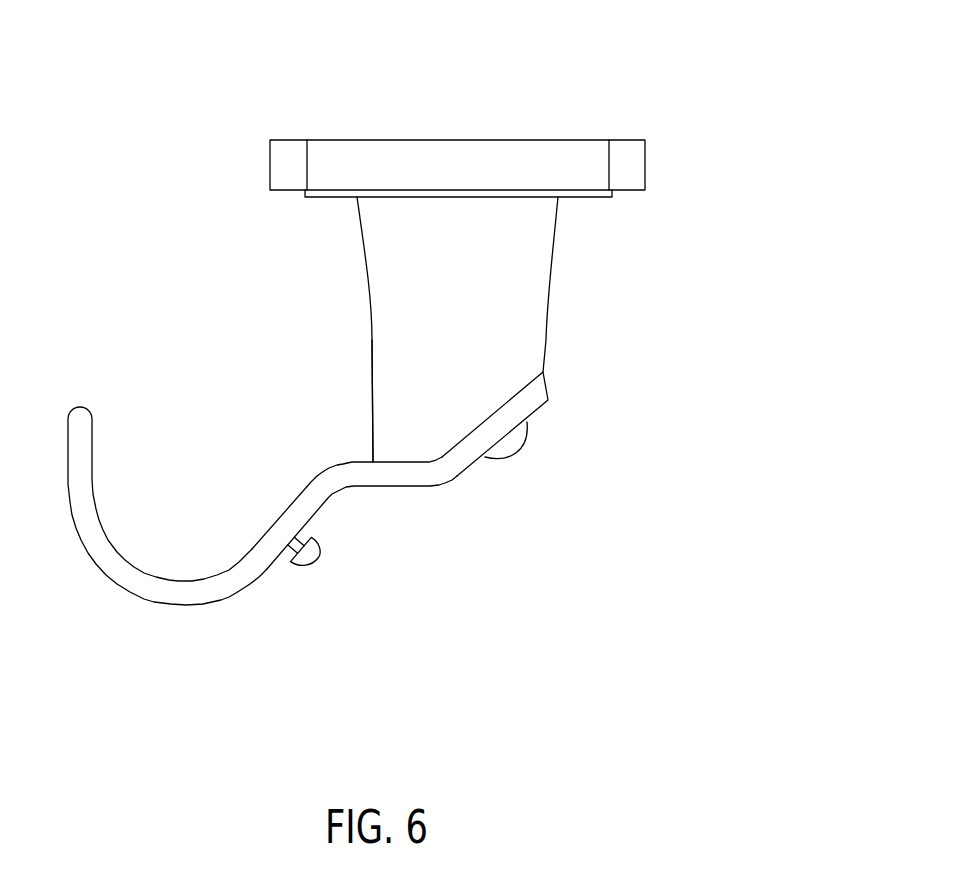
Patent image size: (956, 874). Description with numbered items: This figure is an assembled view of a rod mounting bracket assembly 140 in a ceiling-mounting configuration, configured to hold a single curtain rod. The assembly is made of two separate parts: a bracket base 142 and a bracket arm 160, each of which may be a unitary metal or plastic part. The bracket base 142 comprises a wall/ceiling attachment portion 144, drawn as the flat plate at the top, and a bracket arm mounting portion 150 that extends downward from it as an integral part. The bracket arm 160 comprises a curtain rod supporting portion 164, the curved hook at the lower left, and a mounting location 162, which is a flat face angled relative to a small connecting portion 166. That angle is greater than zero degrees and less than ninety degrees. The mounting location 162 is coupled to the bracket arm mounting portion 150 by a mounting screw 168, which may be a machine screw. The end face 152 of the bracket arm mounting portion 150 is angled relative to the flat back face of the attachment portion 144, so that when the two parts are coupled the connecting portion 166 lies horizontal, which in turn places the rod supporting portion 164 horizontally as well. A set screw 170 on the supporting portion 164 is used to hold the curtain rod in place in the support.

The rod mounting bracket assembly 140 is at (252, 229).
The bracket base 142 is at (674, 101).
The wall/ceiling attachment portion 144 is at (628, 163).
The bracket arm mounting portion 150 is at (530, 237).
The end face 152 is at (490, 418).
The bracket arm 160 is at (484, 502).
The mounting location 162 is at (550, 403).
The curtain rod supporting portion 164 is at (122, 587).
The small connecting portion 166 is at (397, 486).
The mounting screw 168 is at (517, 447).
The set screw 170 is at (296, 568).